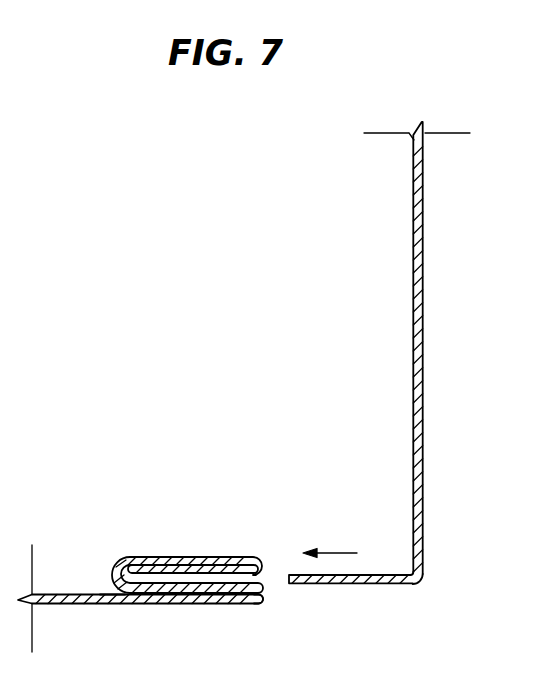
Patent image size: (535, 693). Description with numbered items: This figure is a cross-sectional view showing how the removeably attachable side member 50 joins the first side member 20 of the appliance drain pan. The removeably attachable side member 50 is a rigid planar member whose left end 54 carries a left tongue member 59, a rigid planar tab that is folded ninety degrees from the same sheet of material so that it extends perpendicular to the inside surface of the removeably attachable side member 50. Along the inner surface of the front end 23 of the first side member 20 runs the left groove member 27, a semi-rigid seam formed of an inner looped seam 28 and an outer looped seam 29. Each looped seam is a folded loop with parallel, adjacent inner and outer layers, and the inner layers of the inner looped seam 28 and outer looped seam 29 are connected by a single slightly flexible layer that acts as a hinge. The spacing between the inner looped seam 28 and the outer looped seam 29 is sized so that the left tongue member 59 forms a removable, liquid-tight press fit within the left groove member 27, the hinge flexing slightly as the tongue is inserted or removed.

The first side member 20 is at (140, 626).
The front end 23 is at (152, 605).
The left groove member 27 is at (113, 604).
The inner looped seam 28 is at (258, 557).
The outer looped seam 29 is at (263, 605).
The removeably attachable side member 50 is at (423, 280).
The left end 54 is at (423, 532).
The left tongue member 59 is at (358, 584).